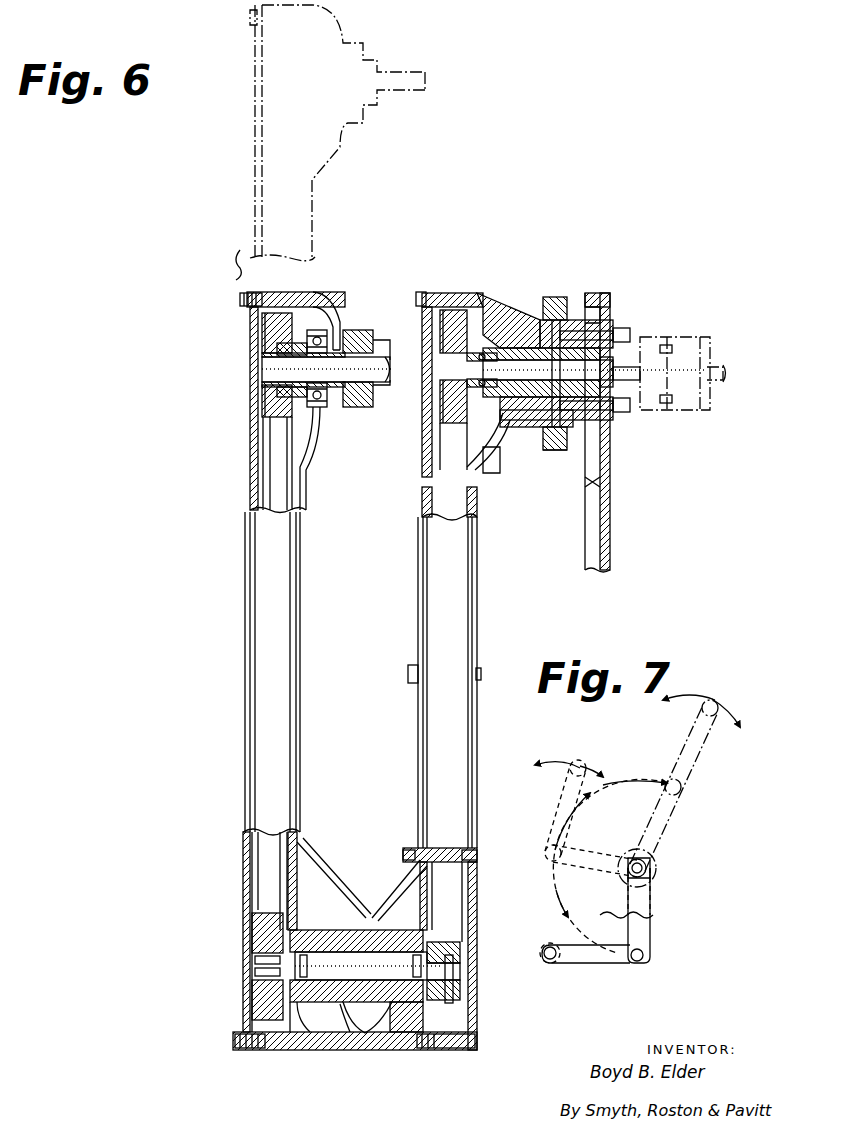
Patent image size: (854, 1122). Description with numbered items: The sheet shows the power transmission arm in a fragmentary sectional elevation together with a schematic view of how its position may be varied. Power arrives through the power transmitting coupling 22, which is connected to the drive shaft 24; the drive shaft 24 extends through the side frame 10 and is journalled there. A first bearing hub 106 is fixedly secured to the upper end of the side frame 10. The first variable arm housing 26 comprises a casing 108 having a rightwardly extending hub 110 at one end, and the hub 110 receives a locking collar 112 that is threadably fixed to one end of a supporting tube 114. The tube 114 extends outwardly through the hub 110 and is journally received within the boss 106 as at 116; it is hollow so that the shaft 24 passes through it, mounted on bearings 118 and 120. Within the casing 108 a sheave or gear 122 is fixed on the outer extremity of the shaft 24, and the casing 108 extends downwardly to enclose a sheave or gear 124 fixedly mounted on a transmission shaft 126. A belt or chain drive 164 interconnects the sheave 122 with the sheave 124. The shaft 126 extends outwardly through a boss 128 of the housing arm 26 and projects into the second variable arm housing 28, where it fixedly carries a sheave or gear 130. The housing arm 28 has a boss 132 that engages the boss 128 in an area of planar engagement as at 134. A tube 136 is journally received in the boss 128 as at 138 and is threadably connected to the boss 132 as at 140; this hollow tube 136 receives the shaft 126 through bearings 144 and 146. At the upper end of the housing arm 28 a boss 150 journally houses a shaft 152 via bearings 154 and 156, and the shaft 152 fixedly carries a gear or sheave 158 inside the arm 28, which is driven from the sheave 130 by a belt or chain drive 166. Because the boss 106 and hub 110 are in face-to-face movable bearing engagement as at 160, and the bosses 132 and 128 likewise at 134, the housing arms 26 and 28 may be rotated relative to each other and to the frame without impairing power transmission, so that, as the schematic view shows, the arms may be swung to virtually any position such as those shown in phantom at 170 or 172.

In FIG. 6, the side frame 10 is at (607, 470).
In FIG. 6, the power transmitting coupling 22 is at (700, 337).
In FIG. 6, the drive shaft 24 is at (518, 367).
In FIG. 7, the drive shaft 24 is at (655, 868).
In FIG. 6, the variable arm housing 26 is at (425, 553).
In FIG. 7, the variable arm housing 26 is at (650, 935).
In FIG. 6, the variable arm housing 28 is at (262, 572).
In FIG. 7, the variable arm housing 28 is at (608, 963).
In FIG. 6, the first bearing hub 106 is at (572, 315).
In FIG. 6, the casing 108 is at (425, 430).
In FIG. 6, the hub 110 is at (498, 305).
In FIG. 6, the locking collar 112 is at (480, 293).
In FIG. 6, the supporting tube 114 is at (530, 297).
In FIG. 6, the journal 116 is at (607, 318).
In FIG. 6, the bearing 118 is at (490, 452).
In FIG. 6, the bearing 120 is at (628, 343).
In FIG. 6, the sheave or gear 122 is at (430, 352).
In FIG. 6, the sheave or gear 124 is at (470, 1003).
In FIG. 6, the transmission shaft 126 is at (327, 965).
In FIG. 6, the boss 128 is at (322, 932).
In FIG. 6, the sheave or gear 130 is at (257, 933).
In FIG. 6, the boss 132 is at (310, 925).
In FIG. 6, the area of planar engagement 134 is at (363, 1020).
In FIG. 6, the tube 136 is at (337, 950).
In FIG. 6, the journal 138 is at (403, 932).
In FIG. 6, the threaded connection 140 is at (298, 1017).
In FIG. 6, the bearing 144 is at (302, 970).
In FIG. 6, the bearing 146 is at (400, 977).
In FIG. 6, the boss 150 is at (333, 303).
In FIG. 6, the shaft 152 is at (265, 363).
In FIG. 7, the shaft 152 is at (548, 960).
In FIG. 6, the bearing 154 is at (318, 405).
In FIG. 6, the bearing 156 is at (350, 334).
In FIG. 6, the gear or sheave 158 is at (262, 325).
In FIG. 6, the face-to-face bearing engagement 160 is at (555, 452).
In FIG. 6, the belt or chain drive 164 is at (432, 450).
In FIG. 6, the belt or chain drive 166 is at (262, 477).
In FIG. 7, the phantom position 170 is at (556, 803).
In FIG. 7, the phantom position 172 is at (683, 735).